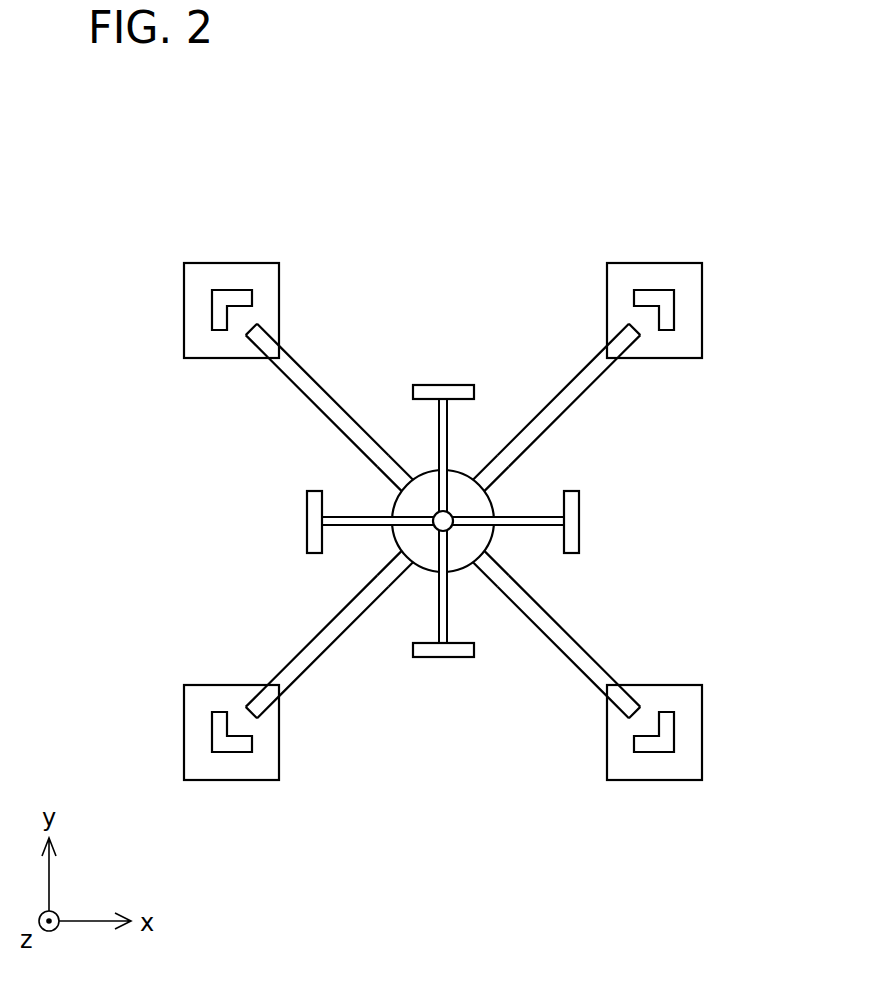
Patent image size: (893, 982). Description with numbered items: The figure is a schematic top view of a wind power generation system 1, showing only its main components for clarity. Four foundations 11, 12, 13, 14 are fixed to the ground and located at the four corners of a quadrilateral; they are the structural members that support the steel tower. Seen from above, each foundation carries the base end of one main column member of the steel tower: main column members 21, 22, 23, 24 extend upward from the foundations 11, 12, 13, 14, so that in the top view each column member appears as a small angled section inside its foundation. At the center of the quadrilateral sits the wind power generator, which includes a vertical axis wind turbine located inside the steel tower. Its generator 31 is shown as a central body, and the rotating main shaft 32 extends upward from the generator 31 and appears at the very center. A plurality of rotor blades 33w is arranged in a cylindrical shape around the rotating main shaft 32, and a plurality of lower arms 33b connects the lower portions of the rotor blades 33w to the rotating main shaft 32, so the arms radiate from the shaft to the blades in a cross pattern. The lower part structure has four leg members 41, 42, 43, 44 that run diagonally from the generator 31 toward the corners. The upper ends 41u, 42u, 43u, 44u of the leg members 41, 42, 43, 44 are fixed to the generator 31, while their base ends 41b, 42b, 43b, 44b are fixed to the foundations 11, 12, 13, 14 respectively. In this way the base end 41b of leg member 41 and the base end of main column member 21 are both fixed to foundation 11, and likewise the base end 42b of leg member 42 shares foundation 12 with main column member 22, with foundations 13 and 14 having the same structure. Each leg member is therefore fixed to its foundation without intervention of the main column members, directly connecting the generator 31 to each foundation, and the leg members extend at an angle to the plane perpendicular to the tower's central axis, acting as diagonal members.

The wind power generation system 1 is at (776, 153).
The foundation 11 is at (214, 768).
The foundation 12 is at (672, 768).
The foundation 13 is at (672, 273).
The foundation 14 is at (214, 273).
The main column member 21 is at (237, 750).
The main column member 22 is at (649, 750).
The main column member 23 is at (649, 295).
The main column member 24 is at (237, 295).
The generator 31 is at (478, 507).
The rotating main shaft 32 is at (441, 523).
The lower arm 33b is at (518, 523).
The rotor blade 33w is at (438, 392).
The leg member 41 is at (313, 663).
The base end 41b is at (250, 716).
The upper end 41u is at (400, 555).
The leg member 42 is at (573, 663).
The base end 42b is at (636, 716).
The upper end 42u is at (486, 555).
The leg member 43 is at (573, 379).
The base end 43b is at (636, 326).
The upper end 43u is at (486, 487).
The leg member 44 is at (313, 379).
The base end 44b is at (250, 326).
The upper end 44u is at (400, 487).